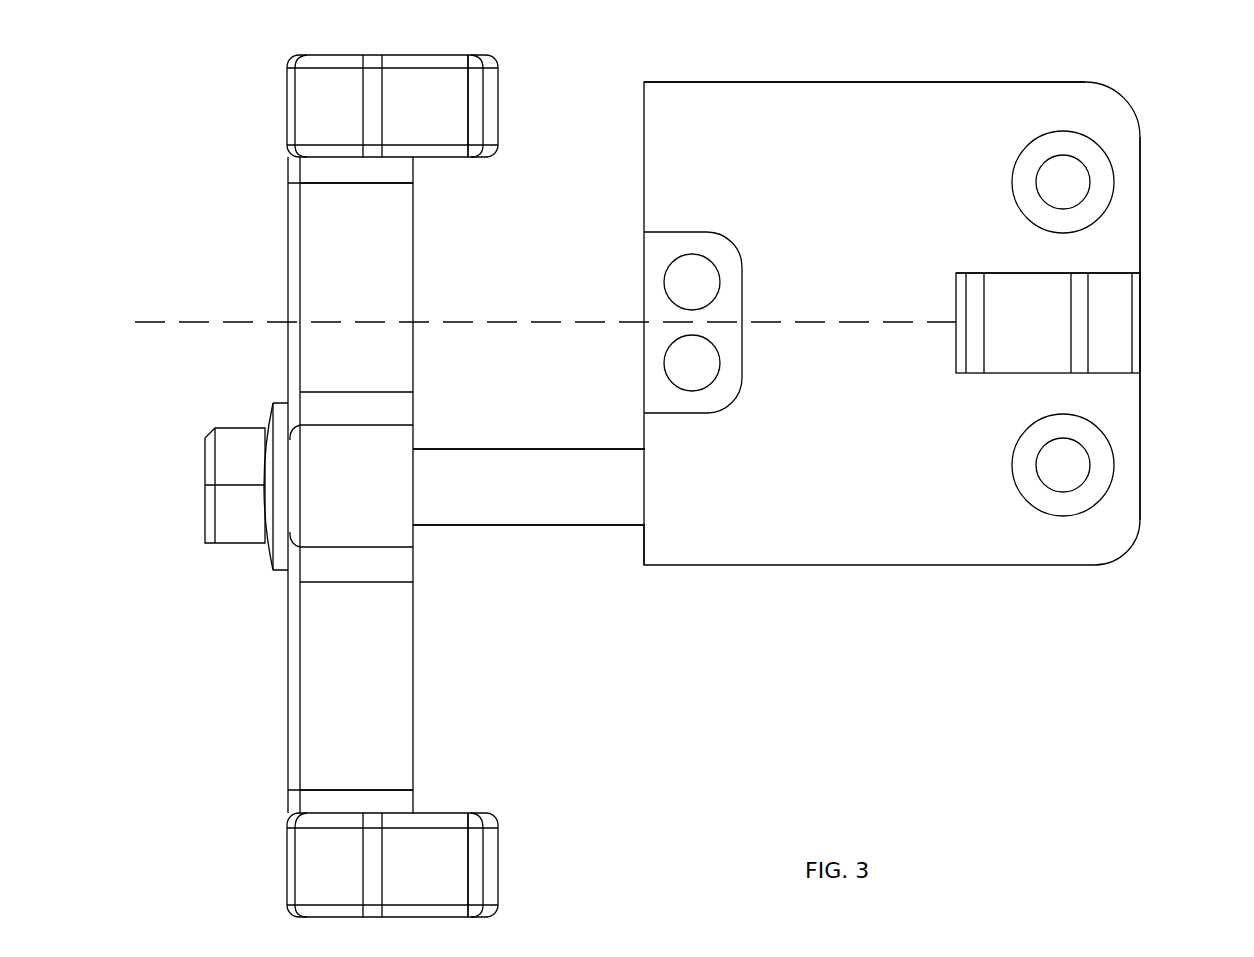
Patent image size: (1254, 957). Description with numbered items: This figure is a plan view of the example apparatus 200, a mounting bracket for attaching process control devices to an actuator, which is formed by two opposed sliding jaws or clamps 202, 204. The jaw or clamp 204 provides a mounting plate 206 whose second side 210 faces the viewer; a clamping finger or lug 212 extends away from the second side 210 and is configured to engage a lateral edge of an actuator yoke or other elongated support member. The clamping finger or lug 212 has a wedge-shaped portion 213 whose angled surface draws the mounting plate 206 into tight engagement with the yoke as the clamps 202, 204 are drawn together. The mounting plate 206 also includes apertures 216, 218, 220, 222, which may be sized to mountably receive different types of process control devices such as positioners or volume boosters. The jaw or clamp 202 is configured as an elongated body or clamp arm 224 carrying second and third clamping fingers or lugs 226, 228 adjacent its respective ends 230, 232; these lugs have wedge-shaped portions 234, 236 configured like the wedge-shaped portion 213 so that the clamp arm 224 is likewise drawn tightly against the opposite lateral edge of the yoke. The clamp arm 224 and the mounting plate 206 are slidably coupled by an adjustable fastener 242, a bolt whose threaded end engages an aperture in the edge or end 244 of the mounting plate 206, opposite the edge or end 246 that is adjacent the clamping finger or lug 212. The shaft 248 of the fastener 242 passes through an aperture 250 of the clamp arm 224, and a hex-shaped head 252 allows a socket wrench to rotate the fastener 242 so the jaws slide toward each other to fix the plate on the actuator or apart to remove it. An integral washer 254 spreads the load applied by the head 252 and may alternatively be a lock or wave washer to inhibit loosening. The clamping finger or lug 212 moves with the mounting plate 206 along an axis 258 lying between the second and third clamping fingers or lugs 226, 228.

The apparatus 200 is at (207, 63).
The jaw or clamp 202 is at (243, 118).
The jaw or clamp 204 is at (826, 65).
The mounting plate 206 is at (868, 82).
The second side 210 is at (885, 211).
The clamping finger or lug 212 is at (1033, 320).
The wedge-shaped portion 213 is at (1003, 272).
The aperture 216 is at (1077, 176).
The aperture 218 is at (1070, 472).
The aperture 220 is at (700, 360).
The aperture 222 is at (698, 283).
The elongated body or clamp arm 224 is at (383, 683).
The second clamping finger or lug 226 is at (343, 55).
The third clamping finger or lug 228 is at (333, 813).
The end 230 is at (413, 167).
The end 232 is at (413, 798).
The wedge-shaped portion 234 is at (471, 55).
The wedge-shaped portion 236 is at (470, 813).
The adjustable fastener 242 is at (572, 507).
The edge or end 244 is at (645, 552).
The edge or end 246 is at (1140, 475).
The shaft 248 is at (545, 494).
The aperture 250 is at (414, 449).
The hex-shaped head 252 is at (232, 470).
The washer 254 is at (280, 434).
The axis 258 is at (437, 322).